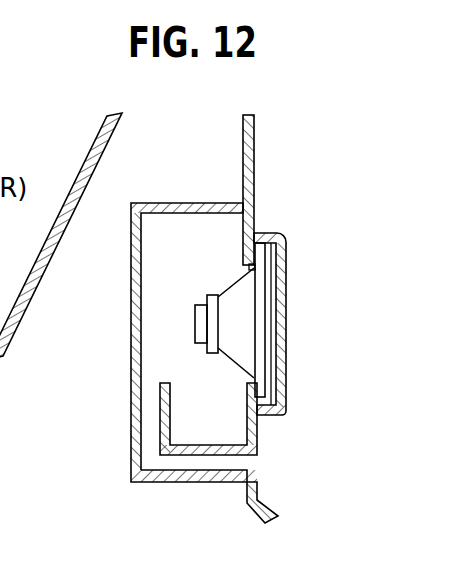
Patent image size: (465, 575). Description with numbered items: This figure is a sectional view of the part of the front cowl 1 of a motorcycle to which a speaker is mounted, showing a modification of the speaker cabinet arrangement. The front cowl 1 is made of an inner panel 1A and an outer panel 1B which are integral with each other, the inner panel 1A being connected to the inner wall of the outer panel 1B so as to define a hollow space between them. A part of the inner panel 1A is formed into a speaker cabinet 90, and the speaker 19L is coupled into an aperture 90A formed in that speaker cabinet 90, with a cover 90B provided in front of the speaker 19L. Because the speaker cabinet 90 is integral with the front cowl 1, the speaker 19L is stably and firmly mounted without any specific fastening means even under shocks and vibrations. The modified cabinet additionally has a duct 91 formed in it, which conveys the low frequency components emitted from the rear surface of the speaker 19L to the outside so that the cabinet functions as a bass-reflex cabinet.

The front cowl 1 is at (314, 121).
The inner panel 1A is at (255, 182).
The outer panel 1B is at (35, 283).
The speaker 19L is at (238, 340).
The speaker cabinet 90 is at (131, 450).
The aperture 90A is at (251, 268).
The cover 90B is at (288, 249).
The duct 91 is at (195, 462).